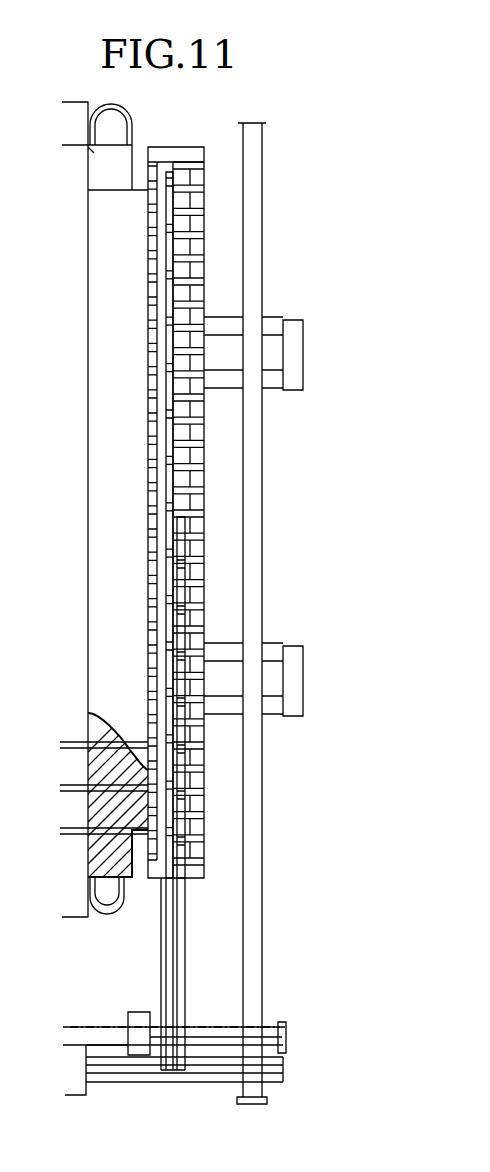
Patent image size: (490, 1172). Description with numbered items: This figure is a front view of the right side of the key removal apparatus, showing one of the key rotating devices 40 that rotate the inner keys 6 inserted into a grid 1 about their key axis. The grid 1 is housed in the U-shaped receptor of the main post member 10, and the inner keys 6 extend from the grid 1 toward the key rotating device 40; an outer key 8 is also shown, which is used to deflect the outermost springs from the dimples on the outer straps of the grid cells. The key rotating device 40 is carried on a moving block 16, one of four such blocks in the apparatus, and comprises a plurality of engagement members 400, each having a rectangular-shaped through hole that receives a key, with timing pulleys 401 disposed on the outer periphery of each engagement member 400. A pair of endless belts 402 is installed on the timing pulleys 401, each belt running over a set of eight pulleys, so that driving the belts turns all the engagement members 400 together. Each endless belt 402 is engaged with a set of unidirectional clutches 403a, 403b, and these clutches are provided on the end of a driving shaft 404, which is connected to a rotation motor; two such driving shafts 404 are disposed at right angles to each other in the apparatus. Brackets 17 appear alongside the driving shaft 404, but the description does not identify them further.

The grid 1 is at (38, 474).
The inner key 6 is at (79, 744).
The outer key 8 is at (87, 771).
The main post member 10 is at (140, 988).
The moving block 16 is at (203, 872).
The bracket 17 is at (270, 395).
The key rotating device 40 is at (207, 518).
The engagement member 400 is at (195, 495).
The timing pulley 401 is at (150, 492).
The endless belt 402 is at (166, 937).
The unidirectional clutch 403a is at (166, 1010).
The unidirectional clutch 403b is at (188, 1018).
The driving shaft 404 is at (253, 808).